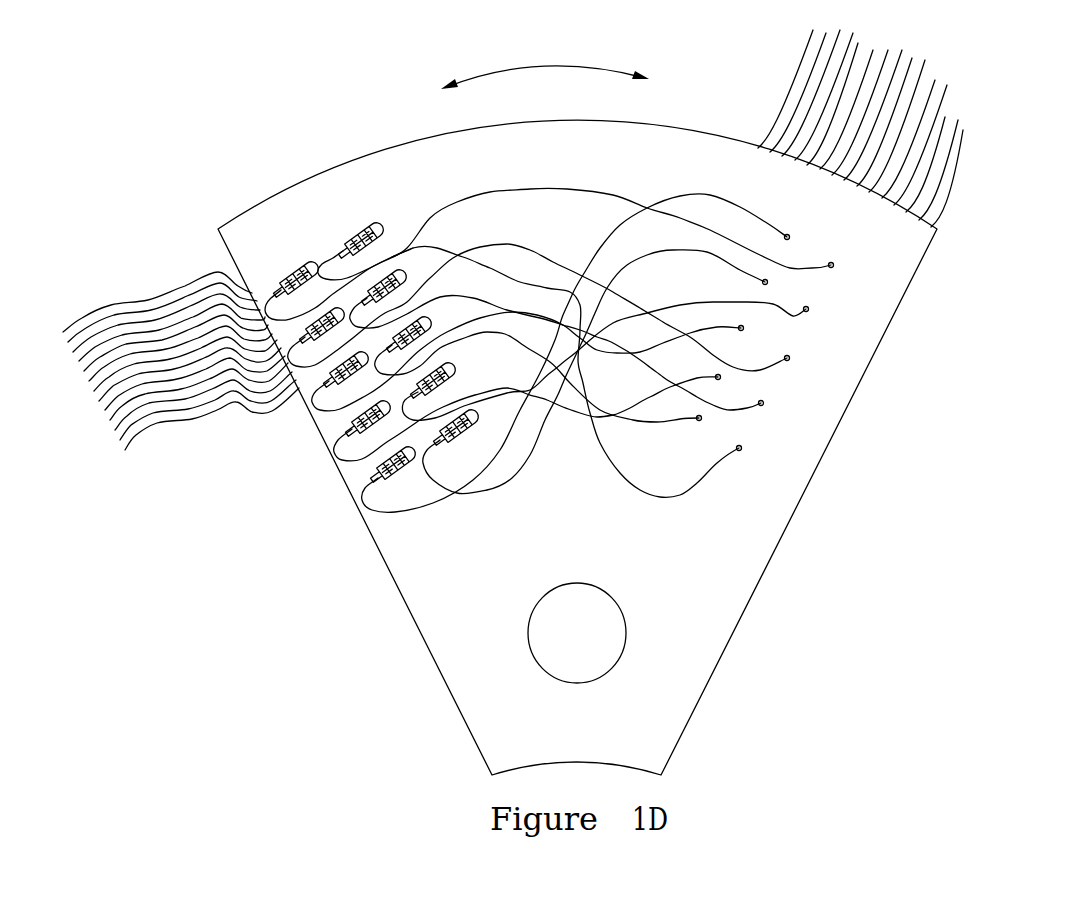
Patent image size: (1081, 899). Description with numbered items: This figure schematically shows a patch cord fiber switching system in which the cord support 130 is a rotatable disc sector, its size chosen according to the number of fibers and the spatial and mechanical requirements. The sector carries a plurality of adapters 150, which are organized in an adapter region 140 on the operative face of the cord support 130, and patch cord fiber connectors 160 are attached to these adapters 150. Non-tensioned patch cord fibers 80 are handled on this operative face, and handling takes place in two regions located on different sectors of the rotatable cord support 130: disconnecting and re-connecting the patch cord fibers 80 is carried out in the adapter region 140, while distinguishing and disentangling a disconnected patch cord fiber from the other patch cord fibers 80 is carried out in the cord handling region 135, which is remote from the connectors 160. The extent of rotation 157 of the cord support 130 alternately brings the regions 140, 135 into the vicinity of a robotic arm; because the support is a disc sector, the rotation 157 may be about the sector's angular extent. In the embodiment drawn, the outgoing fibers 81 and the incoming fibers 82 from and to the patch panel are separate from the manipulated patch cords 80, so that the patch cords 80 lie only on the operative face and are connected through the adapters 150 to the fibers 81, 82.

The patch cord fibers 80 is at (692, 498).
The outgoing fibers 81 is at (109, 306).
The incoming fibers 82 is at (938, 168).
The cord support 130 is at (819, 462).
The cord handling region 135 is at (726, 268).
The adapter region 140 is at (339, 284).
The adapters 150 is at (300, 266).
The rotation 157 is at (510, 64).
The patch cord fiber connectors 160 is at (278, 296).